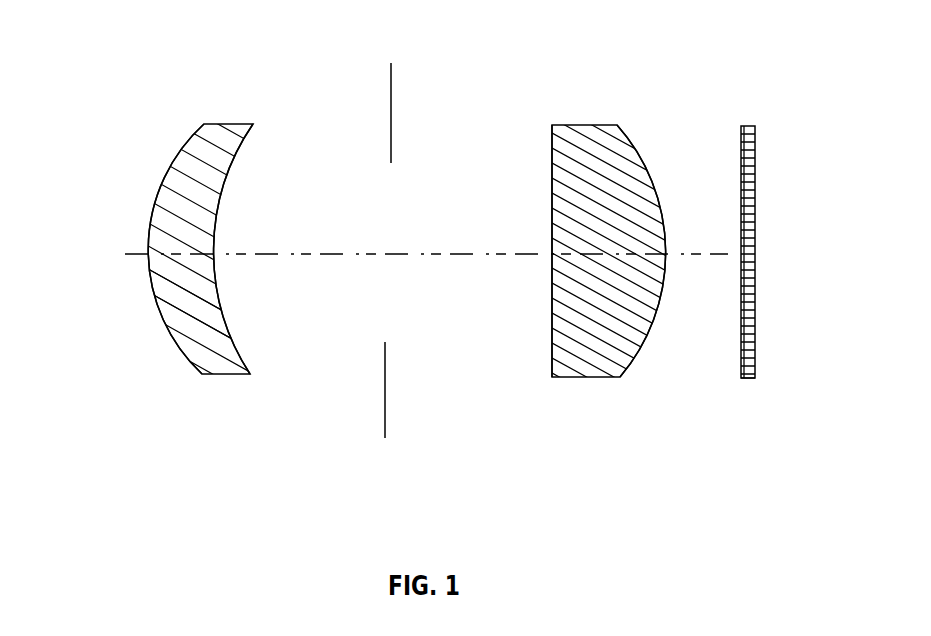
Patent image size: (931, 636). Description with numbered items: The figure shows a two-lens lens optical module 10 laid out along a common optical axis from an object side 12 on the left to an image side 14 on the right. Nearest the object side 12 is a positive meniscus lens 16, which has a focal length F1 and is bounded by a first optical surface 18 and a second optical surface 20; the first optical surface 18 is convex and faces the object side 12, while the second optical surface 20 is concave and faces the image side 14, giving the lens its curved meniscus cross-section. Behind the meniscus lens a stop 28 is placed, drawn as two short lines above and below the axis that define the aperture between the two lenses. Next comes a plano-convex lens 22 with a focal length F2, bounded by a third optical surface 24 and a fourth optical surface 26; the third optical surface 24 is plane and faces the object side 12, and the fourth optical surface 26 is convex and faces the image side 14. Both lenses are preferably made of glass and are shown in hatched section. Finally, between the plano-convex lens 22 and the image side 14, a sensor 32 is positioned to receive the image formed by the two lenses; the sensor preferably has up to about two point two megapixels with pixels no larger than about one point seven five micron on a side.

The lens optical module 10 is at (222, 71).
The object side 12 is at (132, 221).
The image side 14 is at (768, 177).
The positive meniscus lens 16 is at (210, 346).
The first optical surface 18 is at (166, 324).
The second optical surface 20 is at (234, 158).
The plano-convex lens 22 is at (588, 338).
The third optical surface 24 is at (552, 340).
The fourth optical surface 26 is at (616, 141).
The stop 28 is at (384, 430).
The sensor 32 is at (747, 378).